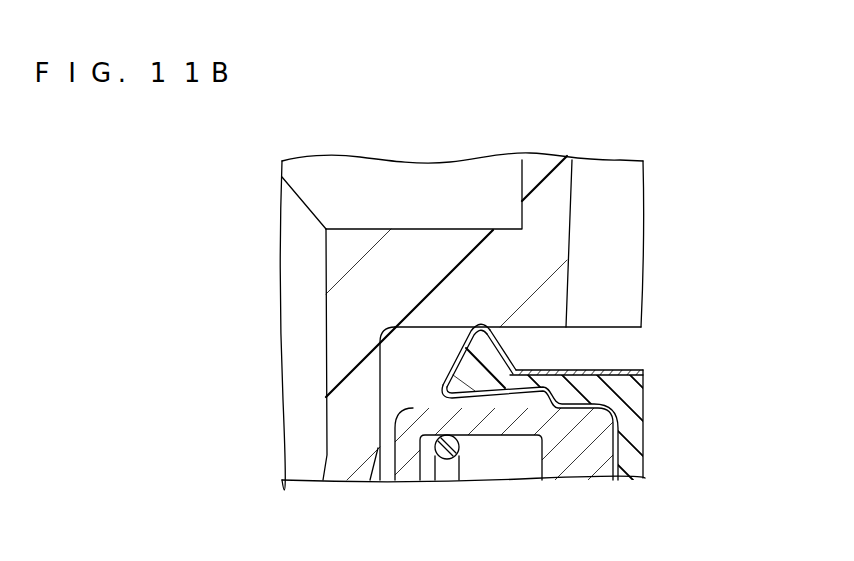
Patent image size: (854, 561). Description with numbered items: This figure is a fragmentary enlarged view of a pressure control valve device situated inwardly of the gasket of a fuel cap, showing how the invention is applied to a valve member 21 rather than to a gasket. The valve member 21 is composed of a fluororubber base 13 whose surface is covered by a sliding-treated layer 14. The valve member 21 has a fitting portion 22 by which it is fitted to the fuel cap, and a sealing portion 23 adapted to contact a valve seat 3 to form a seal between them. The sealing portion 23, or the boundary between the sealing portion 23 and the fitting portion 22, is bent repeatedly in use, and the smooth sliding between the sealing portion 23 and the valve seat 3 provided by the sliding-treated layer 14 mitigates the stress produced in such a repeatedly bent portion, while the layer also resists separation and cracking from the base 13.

The valve seat 3 is at (438, 331).
The fluororubber base 13 is at (497, 359).
The sliding-treated layer 14 is at (464, 345).
The valve member 21 is at (580, 380).
The fitting portion 22 is at (634, 399).
The sealing portion 23 is at (448, 397).